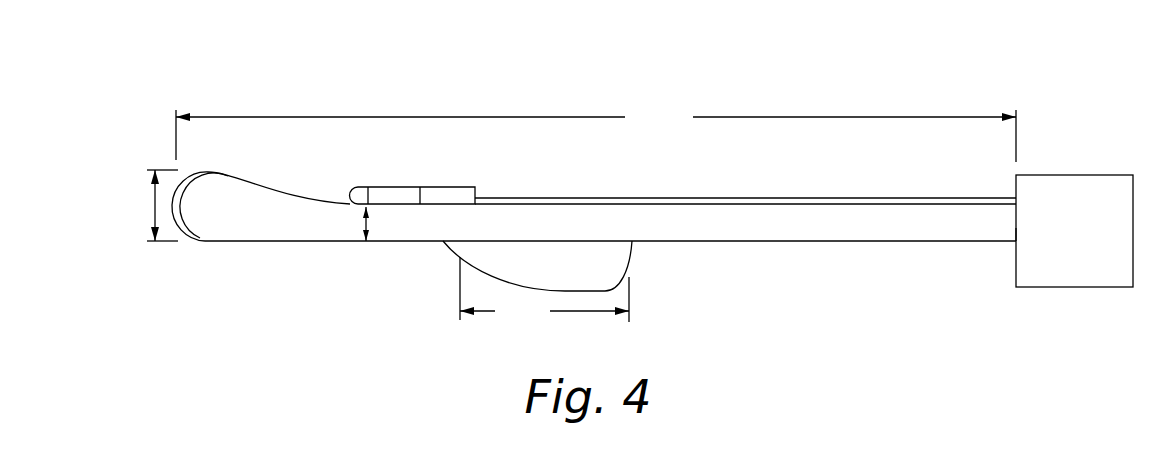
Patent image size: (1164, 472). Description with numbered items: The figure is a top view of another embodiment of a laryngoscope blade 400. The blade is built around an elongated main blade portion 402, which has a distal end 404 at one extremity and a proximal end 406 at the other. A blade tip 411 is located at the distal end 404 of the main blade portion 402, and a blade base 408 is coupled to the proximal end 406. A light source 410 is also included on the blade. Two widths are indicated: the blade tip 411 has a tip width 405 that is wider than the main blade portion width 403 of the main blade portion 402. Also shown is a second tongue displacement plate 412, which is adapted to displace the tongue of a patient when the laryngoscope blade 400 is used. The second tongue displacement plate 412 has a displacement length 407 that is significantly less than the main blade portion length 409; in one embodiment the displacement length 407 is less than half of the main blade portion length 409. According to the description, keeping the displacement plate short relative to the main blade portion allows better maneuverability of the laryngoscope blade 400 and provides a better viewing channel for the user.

The laryngoscope blade 400 is at (791, 70).
The main blade portion 402 is at (743, 217).
The main blade portion width 403 is at (363, 222).
The distal end 404 is at (290, 228).
The tip width 405 is at (148, 207).
The proximal end 406 is at (1015, 232).
The displacement length 407 is at (544, 290).
The blade base 408 is at (1060, 182).
The main blade portion length 409 is at (596, 135).
The light source 410 is at (392, 187).
The blade tip 411 is at (212, 220).
The second tongue displacement plate 412 is at (615, 268).